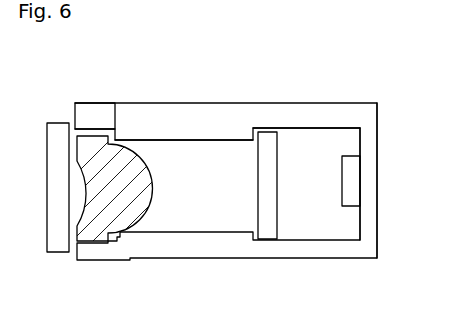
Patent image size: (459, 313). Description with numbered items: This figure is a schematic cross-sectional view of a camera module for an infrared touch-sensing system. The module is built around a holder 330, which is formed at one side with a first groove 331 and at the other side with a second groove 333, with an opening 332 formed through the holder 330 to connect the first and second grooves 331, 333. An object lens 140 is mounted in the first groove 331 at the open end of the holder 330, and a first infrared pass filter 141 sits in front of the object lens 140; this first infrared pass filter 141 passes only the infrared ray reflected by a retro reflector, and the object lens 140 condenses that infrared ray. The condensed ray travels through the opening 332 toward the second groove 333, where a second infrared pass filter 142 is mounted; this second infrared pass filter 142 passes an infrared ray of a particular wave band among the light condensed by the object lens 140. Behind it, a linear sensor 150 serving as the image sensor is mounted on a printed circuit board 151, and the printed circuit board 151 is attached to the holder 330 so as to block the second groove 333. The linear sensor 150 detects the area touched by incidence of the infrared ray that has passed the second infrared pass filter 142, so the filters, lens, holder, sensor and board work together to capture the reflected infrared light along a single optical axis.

The holder 330 is at (177, 112).
The first groove 331 is at (100, 128).
The opening 332 is at (214, 139).
The second groove 333 is at (305, 127).
The object lens 140 is at (97, 223).
The first infrared pass filter 141 is at (58, 252).
The second infrared pass filter 142 is at (270, 239).
The linear sensor 150 is at (351, 182).
The printed circuit board 151 is at (370, 224).